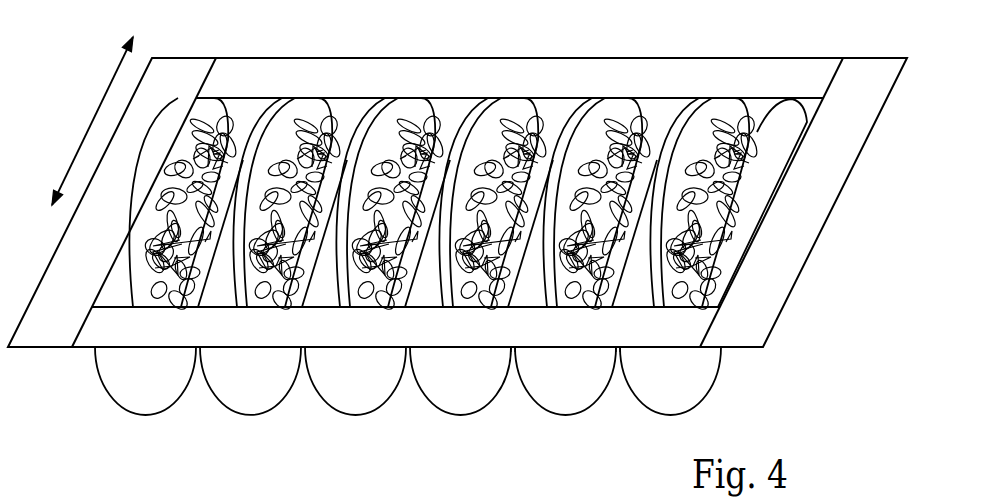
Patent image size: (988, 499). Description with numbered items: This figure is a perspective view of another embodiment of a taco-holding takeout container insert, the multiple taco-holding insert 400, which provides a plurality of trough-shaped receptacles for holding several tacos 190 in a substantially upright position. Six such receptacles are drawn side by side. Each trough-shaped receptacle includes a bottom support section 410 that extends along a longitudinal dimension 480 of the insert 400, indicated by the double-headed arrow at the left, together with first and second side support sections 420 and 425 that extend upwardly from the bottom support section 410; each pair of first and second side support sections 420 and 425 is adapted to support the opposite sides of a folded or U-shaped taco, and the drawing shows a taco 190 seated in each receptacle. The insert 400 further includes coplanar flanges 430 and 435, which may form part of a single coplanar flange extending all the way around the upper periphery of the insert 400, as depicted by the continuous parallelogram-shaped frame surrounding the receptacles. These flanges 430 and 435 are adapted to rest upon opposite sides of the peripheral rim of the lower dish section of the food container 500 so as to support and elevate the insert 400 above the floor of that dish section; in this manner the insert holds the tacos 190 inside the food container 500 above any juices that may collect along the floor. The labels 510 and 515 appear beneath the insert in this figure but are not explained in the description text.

The multiple taco-holding insert 400 is at (853, 302).
The coplanar flange 435 is at (476, 73).
The coplanar flange 430 is at (115, 322).
The tacos 190 is at (593, 130).
The bottom support section 410 is at (565, 416).
The first side support section 420 is at (617, 362).
The second side support section 425 is at (517, 362).
The longitudinal dimension 480 is at (88, 122).
The food container 500 is at (453, 488).
The stage 510 is at (165, 488).
The stage 515 is at (315, 488).